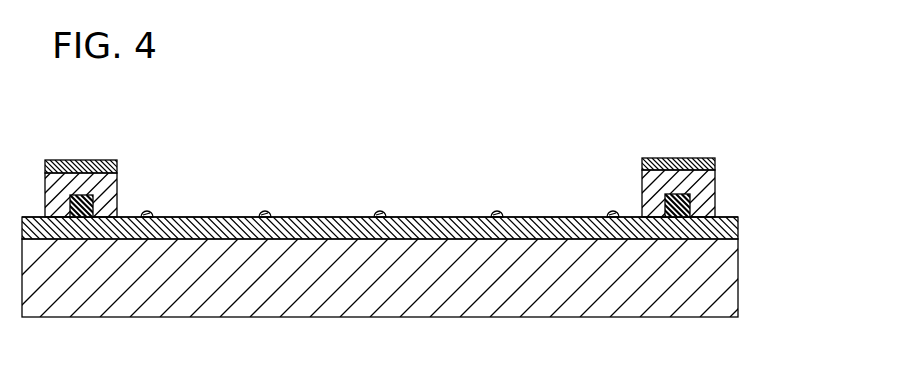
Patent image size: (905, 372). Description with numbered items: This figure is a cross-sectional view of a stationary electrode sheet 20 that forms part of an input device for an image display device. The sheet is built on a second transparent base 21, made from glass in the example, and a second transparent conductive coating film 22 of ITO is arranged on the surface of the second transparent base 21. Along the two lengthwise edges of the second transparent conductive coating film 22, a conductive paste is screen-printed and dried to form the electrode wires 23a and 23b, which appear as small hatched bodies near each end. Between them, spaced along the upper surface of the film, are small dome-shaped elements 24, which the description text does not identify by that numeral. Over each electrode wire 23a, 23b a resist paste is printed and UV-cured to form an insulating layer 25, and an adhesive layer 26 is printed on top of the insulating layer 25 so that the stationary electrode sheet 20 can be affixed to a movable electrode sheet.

The stationary electrode sheet 20 is at (398, 166).
The second transparent base 21 is at (725, 276).
The second transparent conductive coating film 22 is at (730, 223).
The electrode wire 23a is at (88, 203).
The electrode wire 23b is at (688, 197).
The bumps / particles 24 is at (264, 211).
The insulating layer 25 is at (710, 182).
The adhesive layer 26 is at (683, 158).